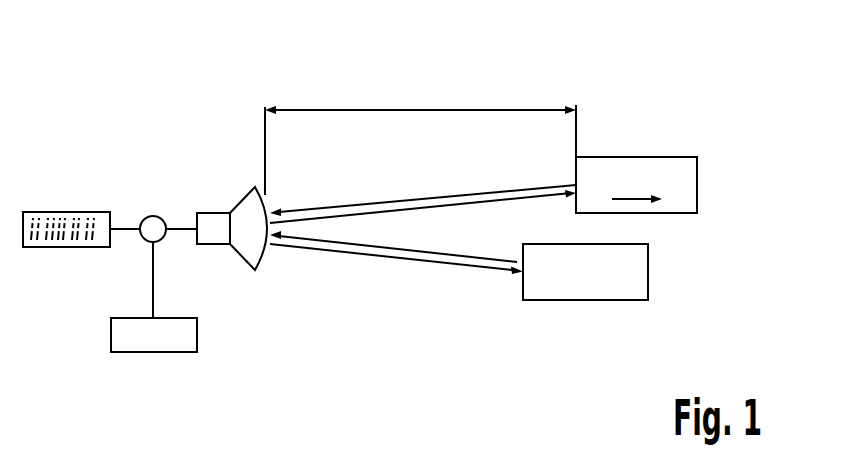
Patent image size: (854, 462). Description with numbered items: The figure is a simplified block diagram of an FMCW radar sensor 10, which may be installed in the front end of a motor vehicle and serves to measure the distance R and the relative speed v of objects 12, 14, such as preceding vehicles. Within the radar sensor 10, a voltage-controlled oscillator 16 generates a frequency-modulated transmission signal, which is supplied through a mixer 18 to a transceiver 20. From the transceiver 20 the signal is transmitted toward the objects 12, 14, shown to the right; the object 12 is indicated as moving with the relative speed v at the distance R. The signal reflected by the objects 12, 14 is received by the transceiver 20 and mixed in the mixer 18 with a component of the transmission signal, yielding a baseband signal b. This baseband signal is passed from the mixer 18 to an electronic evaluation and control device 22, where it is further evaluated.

The FMCW radar sensor 10 is at (167, 112).
The object 12 is at (670, 157).
The object 14 is at (587, 300).
The voltage-controlled oscillator 16 is at (78, 211).
The mixer 18 is at (152, 215).
The transceiver 20 is at (207, 212).
The electronic evaluation and control device 22 is at (197, 335).